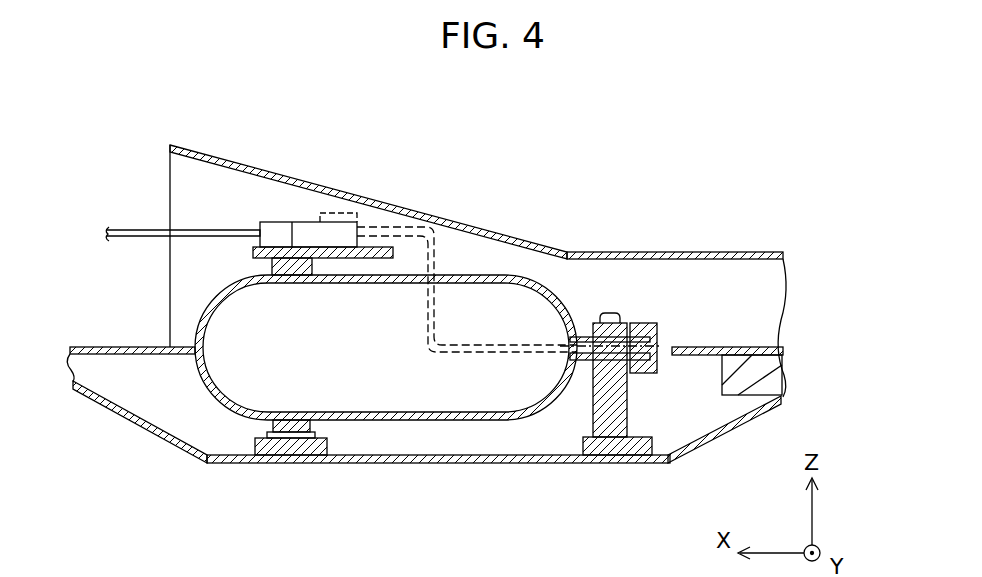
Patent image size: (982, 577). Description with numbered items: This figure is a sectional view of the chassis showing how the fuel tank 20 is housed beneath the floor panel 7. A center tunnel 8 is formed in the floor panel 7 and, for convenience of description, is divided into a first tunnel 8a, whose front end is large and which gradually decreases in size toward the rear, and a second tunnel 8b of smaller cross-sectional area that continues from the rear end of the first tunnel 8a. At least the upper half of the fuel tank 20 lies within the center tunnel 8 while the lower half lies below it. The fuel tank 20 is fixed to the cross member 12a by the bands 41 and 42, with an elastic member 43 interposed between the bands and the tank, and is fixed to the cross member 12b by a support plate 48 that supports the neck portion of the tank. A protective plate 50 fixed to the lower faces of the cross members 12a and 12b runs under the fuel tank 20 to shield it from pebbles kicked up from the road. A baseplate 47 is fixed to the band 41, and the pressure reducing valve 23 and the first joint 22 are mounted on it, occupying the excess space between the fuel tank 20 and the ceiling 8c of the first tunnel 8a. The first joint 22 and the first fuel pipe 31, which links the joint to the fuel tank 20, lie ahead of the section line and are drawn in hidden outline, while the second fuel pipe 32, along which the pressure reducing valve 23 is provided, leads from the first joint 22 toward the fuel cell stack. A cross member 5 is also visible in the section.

The cross member 5 is at (740, 387).
The floor panel 7 is at (105, 347).
The center tunnel 8 is at (625, 126).
The first tunnel 8a is at (480, 226).
The second tunnel 8b is at (660, 252).
The ceiling 8c is at (257, 180).
The cross member 12a is at (332, 456).
The cross member 12b is at (680, 458).
The fuel tank 20 is at (193, 342).
The first joint 22 is at (349, 213).
The pressure reducing valve 23 is at (290, 222).
The first fuel pipe 31 is at (455, 350).
The second fuel pipe 32 is at (132, 227).
The band 41 is at (267, 262).
The band 42 is at (257, 435).
The elastic member 43 is at (273, 270).
The baseplate 47 is at (305, 262).
The support plate 48 is at (595, 418).
The protective plate 50 is at (398, 463).